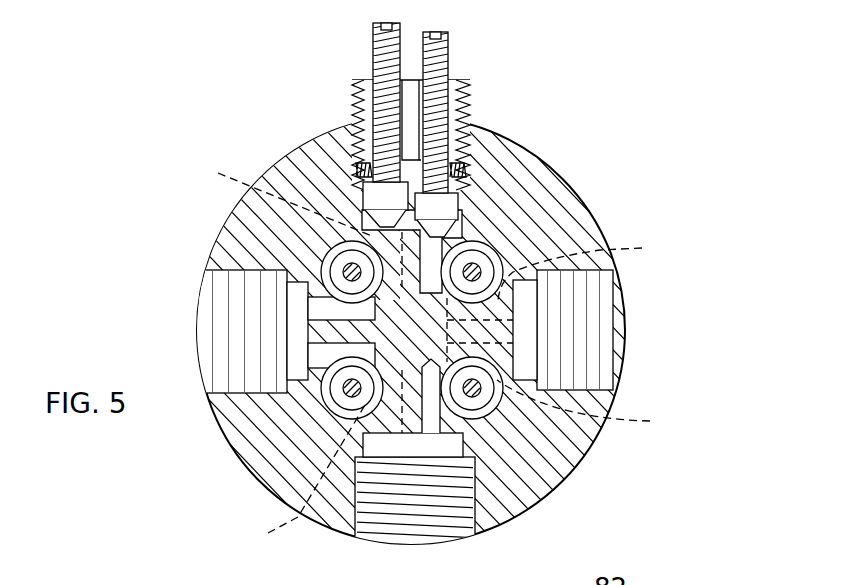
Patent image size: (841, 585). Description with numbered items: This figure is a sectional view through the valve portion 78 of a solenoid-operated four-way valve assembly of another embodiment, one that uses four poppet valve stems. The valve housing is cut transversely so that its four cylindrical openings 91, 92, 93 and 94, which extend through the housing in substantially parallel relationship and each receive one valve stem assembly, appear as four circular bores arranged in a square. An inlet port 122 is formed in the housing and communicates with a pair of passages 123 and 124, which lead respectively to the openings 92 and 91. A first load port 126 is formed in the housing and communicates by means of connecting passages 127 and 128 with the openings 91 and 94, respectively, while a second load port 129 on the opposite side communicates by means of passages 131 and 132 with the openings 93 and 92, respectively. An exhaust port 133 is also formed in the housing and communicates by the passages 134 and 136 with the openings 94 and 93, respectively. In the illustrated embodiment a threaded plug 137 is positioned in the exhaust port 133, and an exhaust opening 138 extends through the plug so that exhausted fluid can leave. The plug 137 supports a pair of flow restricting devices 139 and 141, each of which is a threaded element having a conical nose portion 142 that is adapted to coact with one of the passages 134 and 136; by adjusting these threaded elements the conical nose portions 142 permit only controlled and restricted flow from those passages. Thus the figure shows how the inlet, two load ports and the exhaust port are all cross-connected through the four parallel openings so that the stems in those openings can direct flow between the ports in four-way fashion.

The valve portion 78 is at (251, 480).
The cylindrical opening 91 is at (332, 398).
The cylindrical opening 92 is at (497, 407).
The cylindrical opening 93 is at (504, 258).
The cylindrical opening 94 is at (322, 302).
The inlet port 122 is at (420, 535).
The passage 123 is at (445, 425).
The passage 124 is at (227, 529).
The first load port 126 is at (223, 347).
The connecting passage 127 is at (333, 408).
The connecting passage 128 is at (295, 275).
The second load port 129 is at (607, 353).
The passage 131 is at (650, 241).
The passage 132 is at (654, 414).
The exhaust port 133 is at (462, 126).
The passage 134 is at (177, 164).
The passage 136 is at (490, 249).
The threaded plug 137 is at (378, 117).
The exhaust opening 138 is at (412, 100).
The flow restricting device 139 is at (360, 124).
The flow restricting device 141 is at (442, 63).
The conical nose portion 142 is at (378, 192).